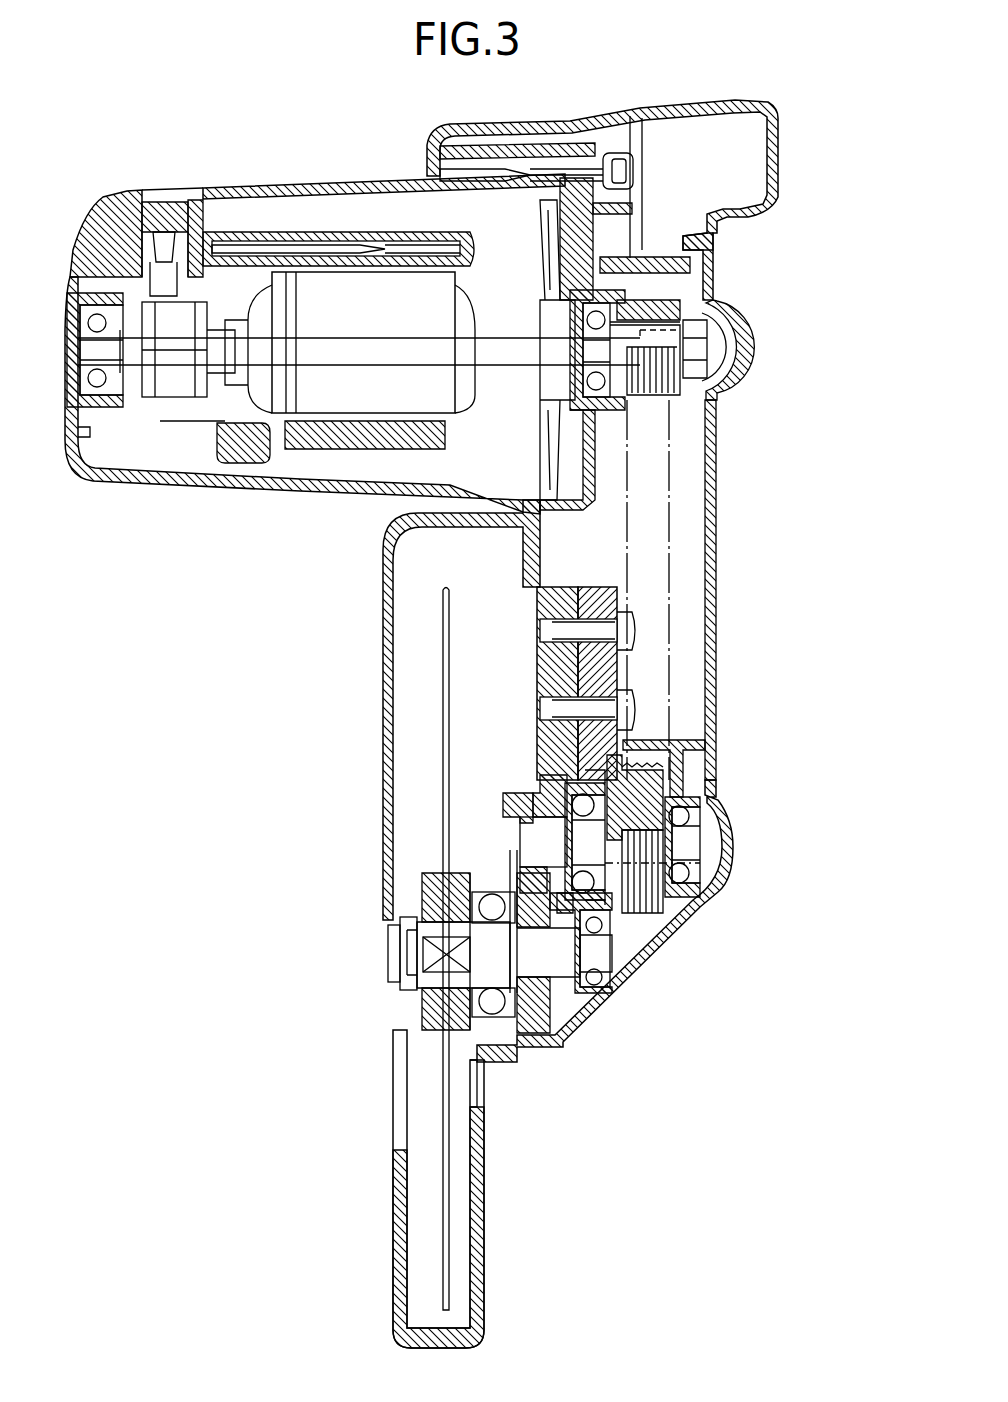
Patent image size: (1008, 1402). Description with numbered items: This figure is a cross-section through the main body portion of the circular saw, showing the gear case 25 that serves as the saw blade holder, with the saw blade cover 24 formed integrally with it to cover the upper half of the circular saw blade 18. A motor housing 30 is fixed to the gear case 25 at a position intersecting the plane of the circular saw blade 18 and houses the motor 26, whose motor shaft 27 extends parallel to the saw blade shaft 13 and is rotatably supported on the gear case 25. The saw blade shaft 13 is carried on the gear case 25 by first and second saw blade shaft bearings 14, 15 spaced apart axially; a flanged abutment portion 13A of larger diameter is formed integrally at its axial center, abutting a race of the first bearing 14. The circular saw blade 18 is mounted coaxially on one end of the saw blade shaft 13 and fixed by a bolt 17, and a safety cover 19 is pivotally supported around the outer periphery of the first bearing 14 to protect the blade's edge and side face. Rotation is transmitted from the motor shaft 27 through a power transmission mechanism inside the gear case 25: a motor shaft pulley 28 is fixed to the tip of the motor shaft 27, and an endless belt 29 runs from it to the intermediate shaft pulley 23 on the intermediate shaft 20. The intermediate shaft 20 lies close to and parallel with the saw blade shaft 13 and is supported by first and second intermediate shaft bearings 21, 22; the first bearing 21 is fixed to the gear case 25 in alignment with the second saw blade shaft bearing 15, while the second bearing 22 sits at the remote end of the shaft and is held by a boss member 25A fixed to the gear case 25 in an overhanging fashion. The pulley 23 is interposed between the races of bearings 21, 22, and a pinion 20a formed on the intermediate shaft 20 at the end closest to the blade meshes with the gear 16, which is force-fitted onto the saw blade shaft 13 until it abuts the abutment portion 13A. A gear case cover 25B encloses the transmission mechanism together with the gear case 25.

The saw blade shaft 13 is at (450, 1000).
The flanged abutment portion 13A is at (565, 1010).
The first saw blade shaft bearing 14 is at (508, 1058).
The second saw blade shaft bearing 15 is at (613, 975).
The gear 16 is at (555, 1020).
The bolt 17 is at (400, 965).
The circular saw blade 18 is at (443, 1095).
The safety cover 19 is at (480, 1222).
The intermediate shaft 20 is at (585, 838).
The pinion 20a is at (520, 800).
The first intermediate shaft bearing 21 is at (595, 803).
The second intermediate shaft bearing 22 is at (682, 868).
The intermediate shaft pulley 23 is at (668, 905).
The saw blade cover 24 is at (386, 583).
The gear case 25 is at (557, 588).
The boss member 25A is at (557, 582).
The gear case cover 25B is at (716, 462).
The motor 26 is at (378, 310).
The motor shaft 27 is at (662, 234).
The motor shaft pulley 28 is at (700, 410).
The endless belt 29 is at (668, 592).
The motor housing 30 is at (272, 184).